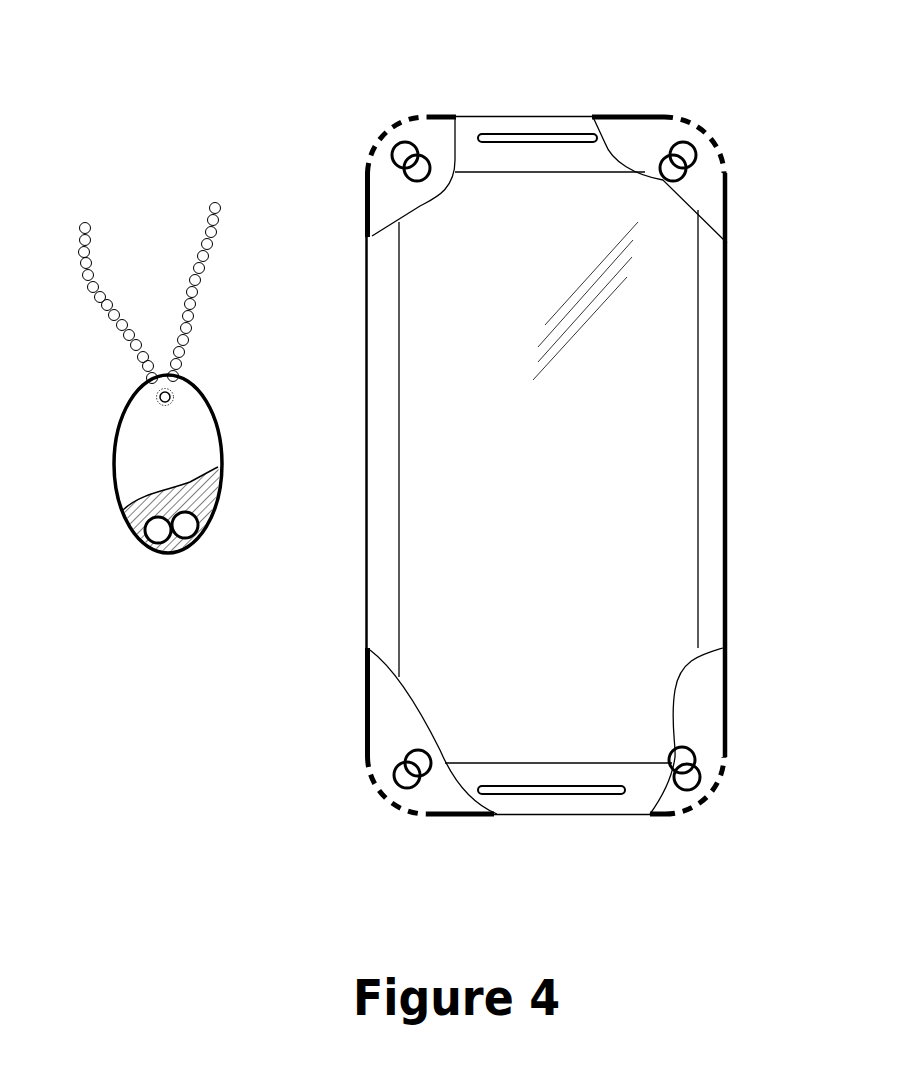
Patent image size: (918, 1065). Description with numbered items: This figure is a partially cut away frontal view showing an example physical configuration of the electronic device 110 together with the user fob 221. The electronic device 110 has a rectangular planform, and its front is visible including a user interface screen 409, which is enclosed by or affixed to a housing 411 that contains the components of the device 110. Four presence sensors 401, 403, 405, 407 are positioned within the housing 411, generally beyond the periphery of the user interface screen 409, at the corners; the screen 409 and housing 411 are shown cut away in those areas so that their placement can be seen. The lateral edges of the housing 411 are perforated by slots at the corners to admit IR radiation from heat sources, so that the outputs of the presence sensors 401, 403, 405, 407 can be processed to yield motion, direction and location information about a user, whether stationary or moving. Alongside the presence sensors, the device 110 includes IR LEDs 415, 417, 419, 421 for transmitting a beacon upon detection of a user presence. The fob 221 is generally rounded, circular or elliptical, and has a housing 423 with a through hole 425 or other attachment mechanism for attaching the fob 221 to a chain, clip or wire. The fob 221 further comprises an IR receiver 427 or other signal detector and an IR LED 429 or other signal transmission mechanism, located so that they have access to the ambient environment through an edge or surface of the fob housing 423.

The electronic device 110 is at (601, 54).
The presence sensor 401 is at (398, 145).
The presence sensor 403 is at (690, 143).
The presence sensor 405 is at (410, 775).
The presence sensor 407 is at (697, 782).
The user interface screen 409 is at (654, 422).
The housing 411 is at (713, 557).
The IR LED 415 is at (407, 176).
The IR LED 417 is at (680, 178).
The IR LED 419 is at (407, 768).
The IR LED 421 is at (688, 751).
The fob 221 is at (112, 387).
The housing 423 is at (208, 445).
The through hole 425 is at (170, 392).
The IR receiver 427 is at (185, 525).
The IR LED 429 is at (160, 533).